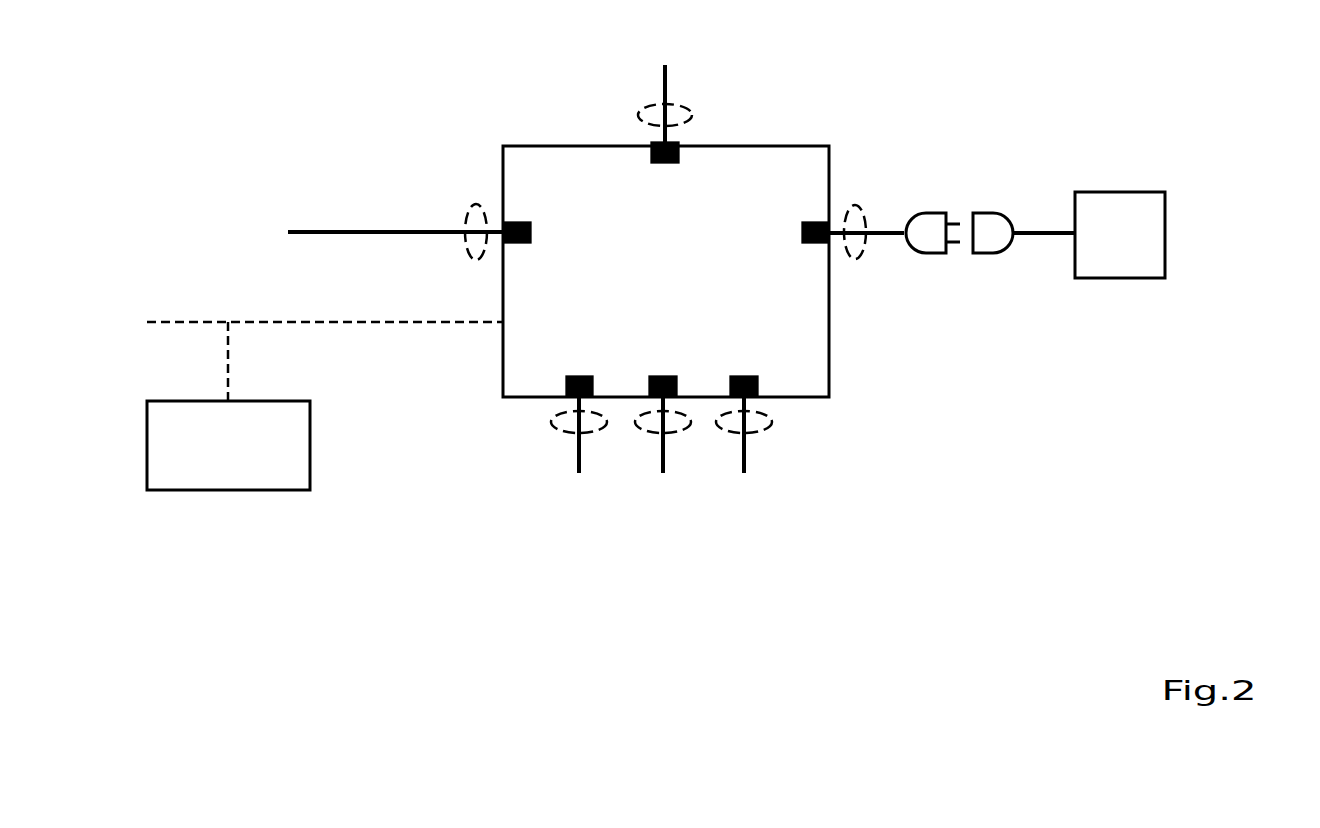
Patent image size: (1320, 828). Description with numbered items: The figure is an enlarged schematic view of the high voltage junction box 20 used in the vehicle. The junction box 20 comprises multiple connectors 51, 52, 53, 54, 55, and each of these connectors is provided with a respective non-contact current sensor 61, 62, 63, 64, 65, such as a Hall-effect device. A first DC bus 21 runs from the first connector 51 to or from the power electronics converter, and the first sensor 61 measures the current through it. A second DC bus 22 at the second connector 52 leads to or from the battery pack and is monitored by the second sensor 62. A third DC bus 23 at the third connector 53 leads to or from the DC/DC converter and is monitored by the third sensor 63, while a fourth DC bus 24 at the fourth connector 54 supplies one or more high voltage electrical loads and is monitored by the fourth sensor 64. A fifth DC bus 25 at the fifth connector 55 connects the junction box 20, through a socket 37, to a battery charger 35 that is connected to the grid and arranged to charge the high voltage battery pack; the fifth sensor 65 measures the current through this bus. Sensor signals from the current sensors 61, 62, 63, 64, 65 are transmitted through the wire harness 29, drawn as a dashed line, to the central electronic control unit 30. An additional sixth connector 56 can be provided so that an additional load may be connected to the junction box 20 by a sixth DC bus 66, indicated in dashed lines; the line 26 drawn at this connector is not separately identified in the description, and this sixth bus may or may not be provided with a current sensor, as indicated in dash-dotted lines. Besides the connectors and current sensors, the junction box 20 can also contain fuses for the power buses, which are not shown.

The junction box 20 is at (829, 336).
The first DC bus 21 is at (670, 72).
The second DC bus 22 is at (320, 228).
The third DC bus 23 is at (743, 473).
The fourth DC bus 24 is at (579, 473).
The fifth DC bus 25 is at (889, 233).
The output cable 26 is at (663, 473).
The wire harness 29 is at (432, 323).
The central electronic control unit 30 is at (253, 483).
The battery charger 35 is at (1097, 192).
The socket 37 is at (970, 187).
The connector 51 is at (665, 163).
The connector 52 is at (531, 232).
The connector 53 is at (748, 376).
The connector 54 is at (575, 376).
The connector 55 is at (802, 232).
The sixth connector 56 is at (660, 376).
The first sensor 61 is at (637, 117).
The second sensor 62 is at (475, 204).
The third sensor 63 is at (772, 422).
The fourth sensor 64 is at (550, 422).
The fifth sensor 65 is at (853, 205).
The sixth DC bus 66 is at (690, 423).